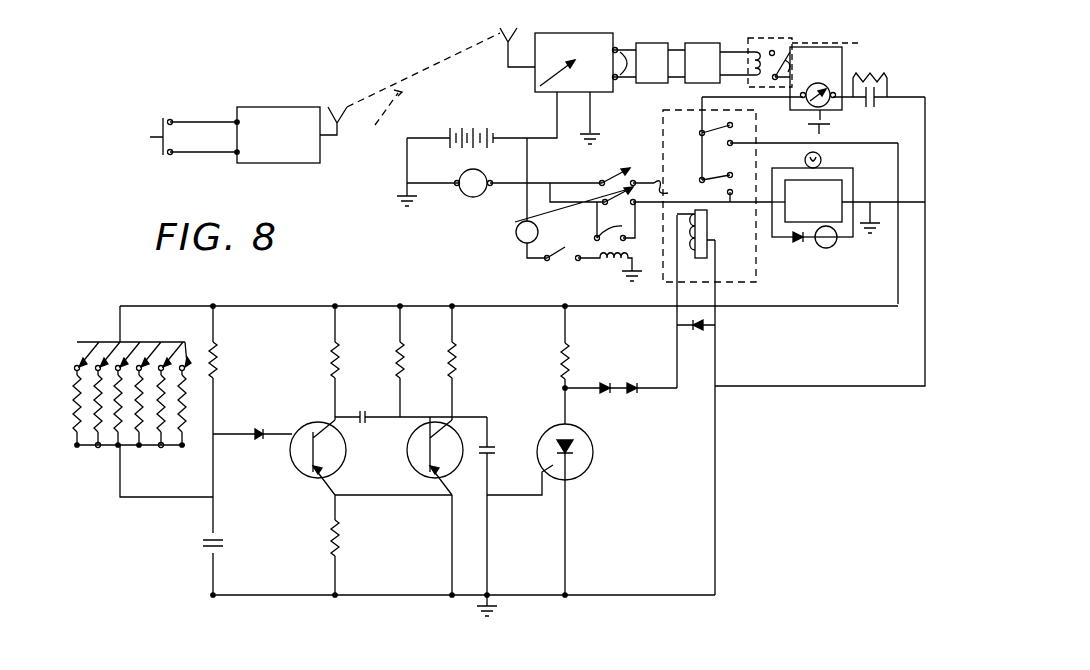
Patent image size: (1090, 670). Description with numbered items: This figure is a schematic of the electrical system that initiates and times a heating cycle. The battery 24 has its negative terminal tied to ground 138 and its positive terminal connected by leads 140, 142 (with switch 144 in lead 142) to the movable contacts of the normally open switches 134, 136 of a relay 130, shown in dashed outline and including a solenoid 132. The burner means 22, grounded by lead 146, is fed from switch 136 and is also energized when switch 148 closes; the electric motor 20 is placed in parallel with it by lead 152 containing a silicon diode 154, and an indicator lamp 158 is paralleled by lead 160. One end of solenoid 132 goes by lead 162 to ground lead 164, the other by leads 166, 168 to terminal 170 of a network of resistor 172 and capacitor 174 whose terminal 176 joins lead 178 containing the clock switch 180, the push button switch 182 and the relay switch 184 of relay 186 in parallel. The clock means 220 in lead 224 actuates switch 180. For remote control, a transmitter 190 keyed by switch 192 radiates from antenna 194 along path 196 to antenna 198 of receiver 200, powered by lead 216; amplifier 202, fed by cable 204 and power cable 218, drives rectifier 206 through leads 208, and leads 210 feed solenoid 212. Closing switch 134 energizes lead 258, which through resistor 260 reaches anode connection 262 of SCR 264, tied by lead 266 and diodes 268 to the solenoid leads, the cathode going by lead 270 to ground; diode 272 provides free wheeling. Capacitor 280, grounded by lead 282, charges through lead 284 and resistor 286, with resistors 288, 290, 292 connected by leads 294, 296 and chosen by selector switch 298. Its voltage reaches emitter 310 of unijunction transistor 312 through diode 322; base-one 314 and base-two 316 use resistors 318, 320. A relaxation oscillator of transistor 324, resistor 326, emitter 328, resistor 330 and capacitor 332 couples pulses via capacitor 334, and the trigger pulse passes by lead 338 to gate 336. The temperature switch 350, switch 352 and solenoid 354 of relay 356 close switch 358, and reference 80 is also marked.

The electric motor 20 is at (824, 248).
The burner means 22 is at (838, 192).
The battery 24 is at (462, 127).
The reference 80 is at (858, 669).
The relay 130 is at (663, 255).
The solenoid 132 is at (775, 312).
The switch 134 is at (700, 137).
The switch 136 is at (715, 175).
The ground 138 is at (405, 192).
The lead 140 is at (526, 163).
The lead 142 is at (667, 191).
The switch 144 is at (604, 176).
The lead 146 is at (900, 235).
The switch 148 is at (518, 214).
The lead 152 is at (805, 243).
The silicon diode 154 is at (805, 285).
The indicator lamp 158 is at (822, 158).
The lead 160 is at (853, 168).
The lead 162 is at (717, 490).
The ground lead 164 is at (630, 597).
The lead 166 is at (675, 312).
The lead 168 is at (828, 388).
The terminal 170 is at (922, 108).
The resistor 172 is at (887, 76).
The capacitor 174 is at (878, 98).
The terminal 176 is at (855, 100).
The lead 178 is at (740, 98).
The timer clock actuated switch 180 is at (836, 90).
The push button electric switch 182 is at (807, 112).
The relay switch 184 is at (816, 83).
The relay 186 is at (846, 51).
The radio transmitter 190 is at (282, 102).
The push button switch 192 is at (160, 142).
The antenna 194 is at (347, 100).
The path 196 is at (423, 92).
The antenna 198 is at (500, 52).
The radio receiver 200 is at (550, 92).
The audio amplifier 202 is at (680, 60).
The electric cable 204 is at (613, 97).
The rectifier 206 is at (690, 105).
The leads 208 is at (687, 48).
The leads 210 is at (740, 63).
The solenoid 212 is at (772, 50).
The lead 216 is at (525, 115).
The power cable 218 is at (645, 83).
The clock means 220 is at (472, 198).
The lead 224 is at (508, 183).
The lead 258 is at (485, 306).
The resistor 260 is at (563, 351).
The anode connection 262 is at (570, 407).
The silicon controlled rectifier 264 is at (593, 462).
The lead 266 is at (606, 384).
The silicon diodes 268 is at (635, 383).
The lead 270 is at (567, 553).
The silicon diode 272 is at (705, 332).
The low leakage capacitor 280 is at (217, 538).
The lead 282 is at (217, 582).
The lead 284 is at (218, 407).
The resistor 286 is at (220, 358).
The resistor 288 is at (72, 413).
The resistor 290 is at (157, 415).
The resistor 292 is at (180, 407).
The lead 294 is at (110, 452).
The lead 296 is at (173, 500).
The selector switch means 298 is at (98, 333).
The emitter 310 is at (307, 427).
The unijunction transistor 312 is at (343, 475).
The base-one 314 is at (338, 502).
The base-two 316 is at (335, 413).
The resistor 318 is at (338, 557).
The resistor 320 is at (340, 358).
The diode 322 is at (258, 443).
The unijunction transistor 324 is at (458, 435).
The resistor 326 is at (457, 352).
The emitter 328 is at (416, 428).
The resistor 330 is at (403, 360).
The capacitor 332 is at (488, 447).
The coupling capacitor 334 is at (362, 425).
The gate 336 is at (542, 463).
The lead 338 is at (518, 497).
The temperature responsive electric switch means 350 is at (518, 242).
The on-off electric switch 352 is at (555, 263).
The solenoid 354 is at (607, 264).
The relay 356 is at (600, 252).
The solenoid actuated switch 358 is at (600, 228).